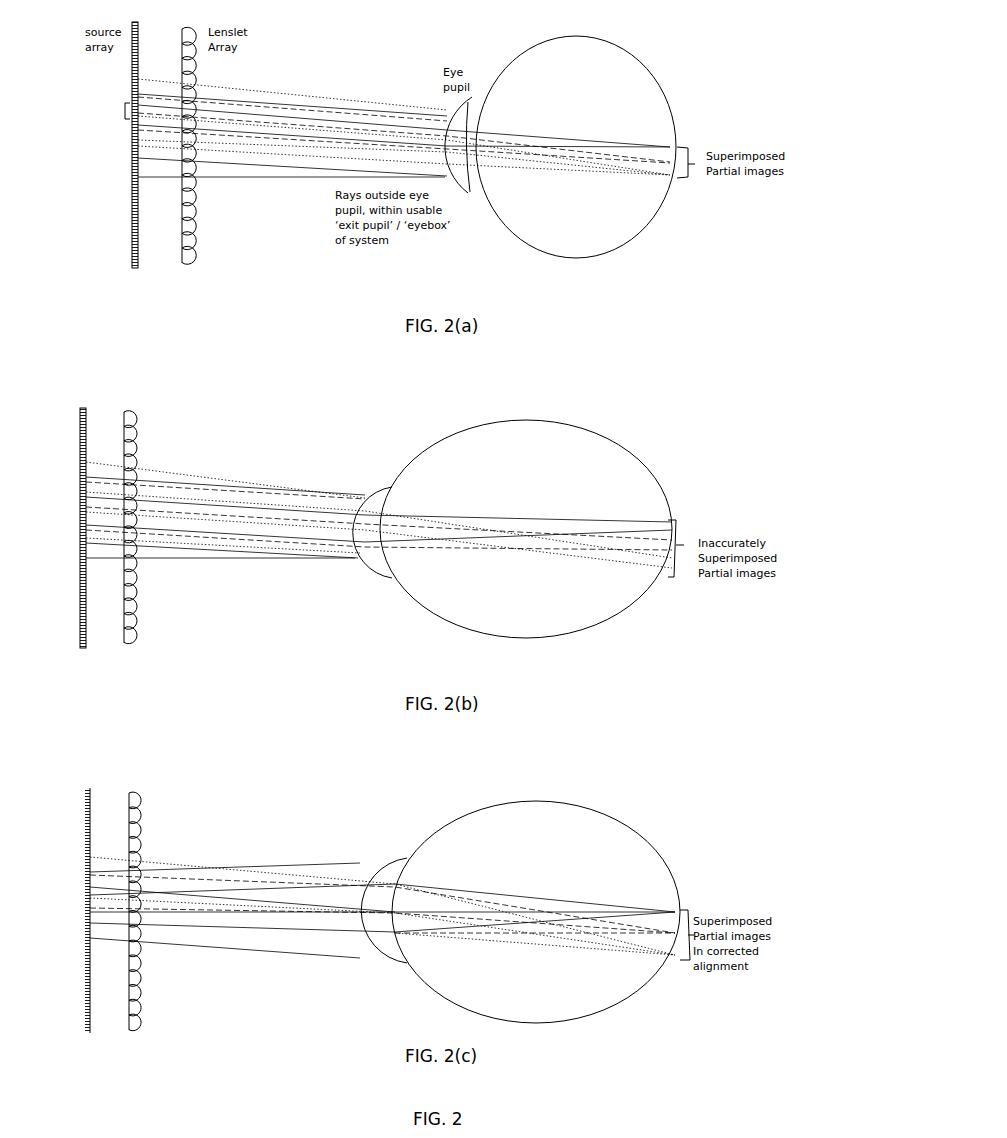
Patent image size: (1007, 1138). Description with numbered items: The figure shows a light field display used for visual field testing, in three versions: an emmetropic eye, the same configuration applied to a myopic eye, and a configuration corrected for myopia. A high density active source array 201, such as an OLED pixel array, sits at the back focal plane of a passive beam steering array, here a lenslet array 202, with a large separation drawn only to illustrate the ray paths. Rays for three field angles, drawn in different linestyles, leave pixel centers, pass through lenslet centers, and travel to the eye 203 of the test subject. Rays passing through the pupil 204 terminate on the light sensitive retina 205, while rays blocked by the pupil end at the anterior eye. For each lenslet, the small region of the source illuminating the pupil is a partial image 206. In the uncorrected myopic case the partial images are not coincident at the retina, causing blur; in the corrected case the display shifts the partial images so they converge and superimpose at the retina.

In FIG. 2A, the source array 201 is at (130, 68).
In FIG. 2B, the source array 201 is at (72, 452).
In FIG. 2C, the source array 201 is at (80, 835).
In FIG. 2A, the lenslet array 202 is at (200, 67).
In FIG. 2B, the lenslet array 202 is at (138, 437).
In FIG. 2C, the lenslet array 202 is at (145, 816).
In FIG. 2A, the eye 203 is at (658, 73).
In FIG. 2B, the eye 203 is at (645, 453).
In FIG. 2C, the eye 203 is at (645, 835).
In FIG. 2A, the pupil 204 is at (462, 118).
In FIG. 2B, the pupil 204 is at (378, 500).
In FIG. 2C, the pupil 204 is at (387, 875).
In FIG. 2A, the retina 205 is at (660, 185).
In FIG. 2B, the retina 205 is at (643, 587).
In FIG. 2C, the retina 205 is at (652, 967).
In FIG. 2A, the partial image 206 is at (121, 123).